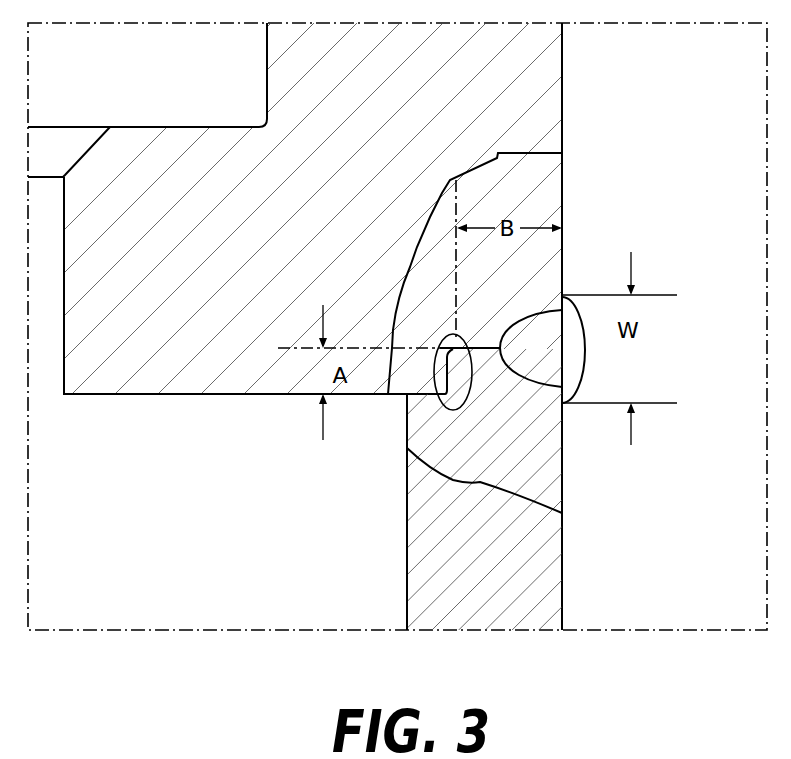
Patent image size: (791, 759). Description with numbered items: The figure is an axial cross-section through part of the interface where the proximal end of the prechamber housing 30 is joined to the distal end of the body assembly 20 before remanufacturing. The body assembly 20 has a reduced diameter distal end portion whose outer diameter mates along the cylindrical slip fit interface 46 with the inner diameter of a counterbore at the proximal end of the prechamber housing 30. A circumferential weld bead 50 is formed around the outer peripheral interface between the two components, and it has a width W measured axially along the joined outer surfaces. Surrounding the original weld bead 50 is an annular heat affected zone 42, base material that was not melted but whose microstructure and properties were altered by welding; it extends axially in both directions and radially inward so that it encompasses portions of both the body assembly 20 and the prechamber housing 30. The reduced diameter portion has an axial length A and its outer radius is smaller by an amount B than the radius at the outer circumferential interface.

The body assembly 20 is at (533, 72).
The prechamber housing 30 is at (535, 598).
The heat affected zone 42 is at (410, 235).
The slip fit interface 46 is at (455, 410).
The weld bead 50 is at (590, 362).